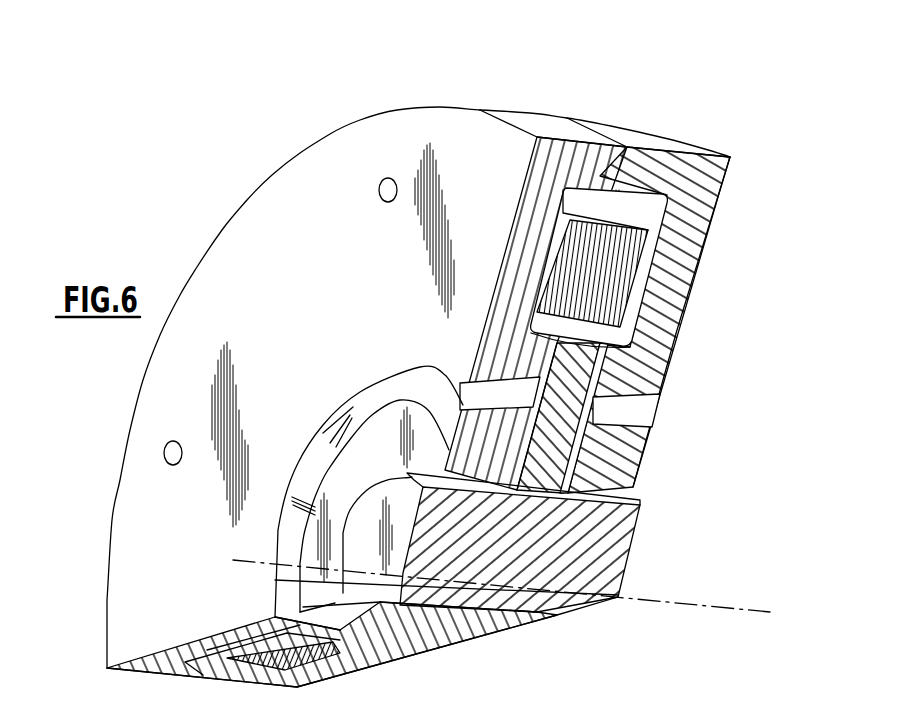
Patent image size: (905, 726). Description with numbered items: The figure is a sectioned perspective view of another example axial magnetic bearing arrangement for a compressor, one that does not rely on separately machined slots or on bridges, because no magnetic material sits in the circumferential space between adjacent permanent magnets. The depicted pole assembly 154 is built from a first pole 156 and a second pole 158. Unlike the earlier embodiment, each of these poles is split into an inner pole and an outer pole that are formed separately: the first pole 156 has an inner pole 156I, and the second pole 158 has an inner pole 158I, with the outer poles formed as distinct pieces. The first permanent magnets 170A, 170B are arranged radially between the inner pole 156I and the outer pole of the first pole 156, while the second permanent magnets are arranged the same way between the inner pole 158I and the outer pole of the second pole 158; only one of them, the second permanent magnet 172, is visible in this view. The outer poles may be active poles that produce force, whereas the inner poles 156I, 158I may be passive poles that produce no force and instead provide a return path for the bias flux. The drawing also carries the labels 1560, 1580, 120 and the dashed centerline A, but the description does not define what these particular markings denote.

The pole assembly 154 is at (459, 62).
The first pole 156 is at (400, 98).
The outer surface of first housing body 1560 is at (143, 513).
The inner pole of the first pole 156I is at (320, 593).
The second pole 158 is at (650, 120).
The outer surface of second housing body 1580 is at (722, 190).
The inner pole of the second pole 158I is at (630, 468).
The first permanent magnet 170A is at (297, 522).
The first permanent magnet 170B is at (377, 393).
The second permanent magnet 172 is at (645, 405).
The base block 120 is at (473, 550).
The axis A is at (700, 612).